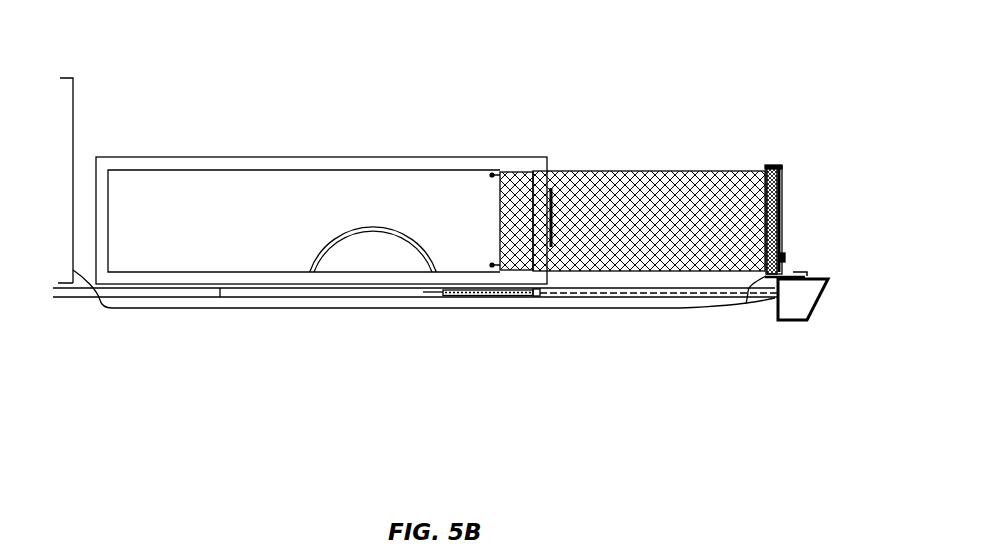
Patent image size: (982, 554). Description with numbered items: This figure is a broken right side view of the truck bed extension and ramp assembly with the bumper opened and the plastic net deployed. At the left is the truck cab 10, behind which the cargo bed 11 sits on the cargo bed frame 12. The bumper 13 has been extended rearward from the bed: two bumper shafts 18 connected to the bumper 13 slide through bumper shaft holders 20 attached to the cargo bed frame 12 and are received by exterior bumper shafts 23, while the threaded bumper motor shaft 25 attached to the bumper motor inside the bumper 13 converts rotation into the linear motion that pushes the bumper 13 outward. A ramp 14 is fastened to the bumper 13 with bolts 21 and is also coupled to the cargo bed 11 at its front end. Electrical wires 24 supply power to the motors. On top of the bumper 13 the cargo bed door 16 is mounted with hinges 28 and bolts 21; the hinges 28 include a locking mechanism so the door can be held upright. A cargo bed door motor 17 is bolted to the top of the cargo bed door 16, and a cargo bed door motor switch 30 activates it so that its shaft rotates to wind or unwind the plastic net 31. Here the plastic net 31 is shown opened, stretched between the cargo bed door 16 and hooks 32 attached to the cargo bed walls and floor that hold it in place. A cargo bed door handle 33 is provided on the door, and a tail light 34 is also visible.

The truck cab 10 is at (68, 77).
The cargo bed 11 is at (293, 152).
The cargo bed frame 12 is at (68, 298).
The bumper 13 is at (813, 305).
The ramp 14 is at (713, 273).
The cargo bed door 16 is at (786, 199).
The cargo bed door motor 17 is at (781, 170).
The bumper shaft 18 is at (557, 294).
The bumper shaft holder 20 is at (218, 298).
The bolt 21 is at (772, 166).
The exterior bumper shaft 23 is at (485, 297).
The electrical wire 24 is at (265, 308).
The bumper motor shaft 25 is at (625, 293).
The hinge 28 is at (784, 254).
The cargo bed door motor switch 30 is at (767, 168).
The plastic net 31 is at (640, 187).
The hook 32 is at (491, 174).
The cargo bed door handle 33 is at (782, 171).
The tail light 34 is at (553, 185).